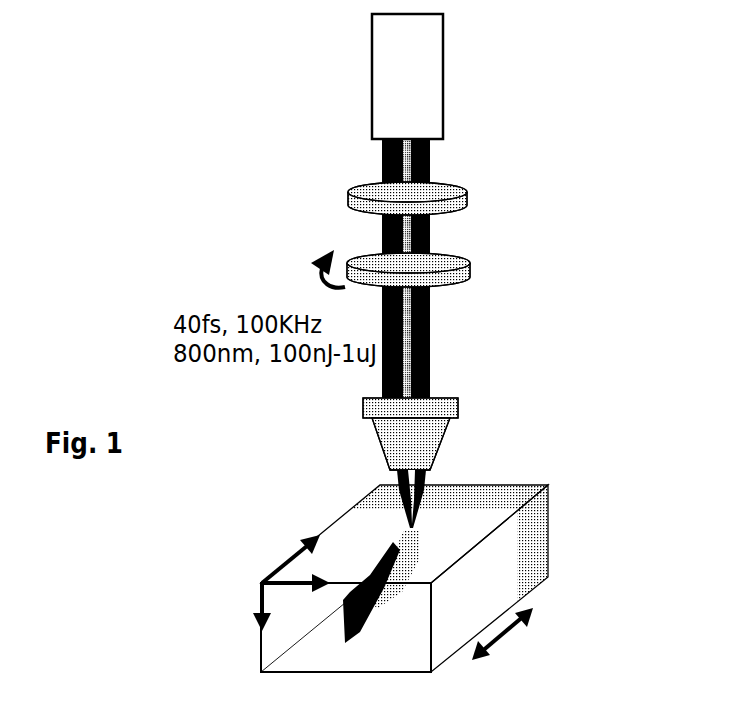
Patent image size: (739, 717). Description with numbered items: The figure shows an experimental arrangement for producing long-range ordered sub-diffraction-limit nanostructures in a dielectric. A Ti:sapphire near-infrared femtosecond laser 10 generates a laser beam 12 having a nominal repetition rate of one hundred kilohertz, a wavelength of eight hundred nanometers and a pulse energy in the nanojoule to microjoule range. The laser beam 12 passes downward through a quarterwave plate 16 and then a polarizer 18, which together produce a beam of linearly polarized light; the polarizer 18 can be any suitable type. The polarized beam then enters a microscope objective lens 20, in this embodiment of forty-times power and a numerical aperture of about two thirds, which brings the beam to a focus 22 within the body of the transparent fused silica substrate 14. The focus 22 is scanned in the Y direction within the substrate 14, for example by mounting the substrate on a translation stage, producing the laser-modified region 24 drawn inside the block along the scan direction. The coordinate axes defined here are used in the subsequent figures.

The femtosecond laser 10 is at (447, 51).
The laser beam 12 is at (423, 161).
The transparent substrate 14 is at (373, 508).
The quarterwave plate 16 is at (448, 202).
The polarizer 18 is at (468, 265).
The microscope objective lens 20 is at (453, 393).
The focus 22 is at (412, 522).
The scanned track 24 is at (397, 572).